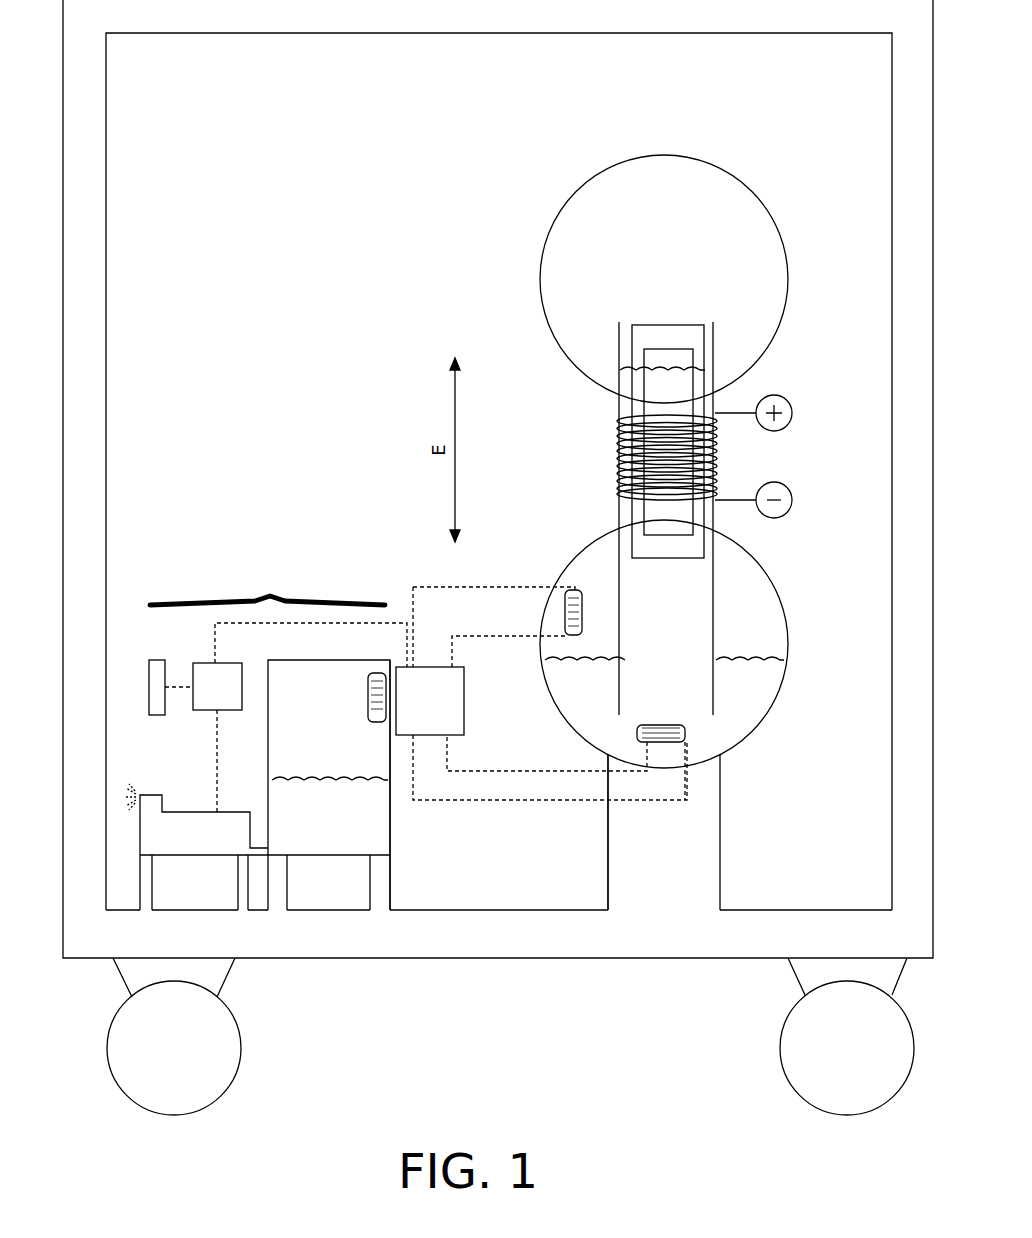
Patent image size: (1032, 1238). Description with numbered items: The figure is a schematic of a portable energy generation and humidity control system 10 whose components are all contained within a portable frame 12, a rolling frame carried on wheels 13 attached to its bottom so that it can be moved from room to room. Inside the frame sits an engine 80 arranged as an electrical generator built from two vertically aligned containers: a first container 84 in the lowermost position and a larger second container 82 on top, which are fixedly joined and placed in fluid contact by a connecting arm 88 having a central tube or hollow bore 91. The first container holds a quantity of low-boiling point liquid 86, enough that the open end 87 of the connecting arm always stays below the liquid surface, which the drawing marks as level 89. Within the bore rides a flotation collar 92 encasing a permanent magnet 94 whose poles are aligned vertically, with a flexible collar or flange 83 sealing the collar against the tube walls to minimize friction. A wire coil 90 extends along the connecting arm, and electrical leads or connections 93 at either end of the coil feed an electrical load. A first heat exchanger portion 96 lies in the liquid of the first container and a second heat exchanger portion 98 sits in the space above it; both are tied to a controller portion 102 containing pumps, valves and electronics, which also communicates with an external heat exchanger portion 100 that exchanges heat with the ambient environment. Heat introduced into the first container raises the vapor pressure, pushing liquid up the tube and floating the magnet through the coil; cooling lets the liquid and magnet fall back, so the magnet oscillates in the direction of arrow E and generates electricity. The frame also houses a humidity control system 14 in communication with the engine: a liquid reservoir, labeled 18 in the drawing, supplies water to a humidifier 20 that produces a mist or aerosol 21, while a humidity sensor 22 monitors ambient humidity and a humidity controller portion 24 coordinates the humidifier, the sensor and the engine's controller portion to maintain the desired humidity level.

The portable energy generation and humidity control system 10 is at (565, 972).
The portable frame 12 is at (87, 437).
The wheels 13 is at (203, 1050).
The humidity control system 14 is at (275, 597).
The fluid reservoir 18 is at (360, 825).
The pump 20 is at (188, 843).
The mist or aerosol 21 is at (123, 776).
The humidity sensor 22 is at (163, 662).
The humidity controller portion 24 is at (200, 703).
The engine 80 is at (528, 227).
The second container 82 is at (788, 272).
The flexible collar or flange 83 is at (627, 370).
The first container 84 is at (788, 637).
The low-boiling point liquid 86 is at (718, 730).
The open end of the connecting arm 87 is at (619, 685).
The connecting arm 88 is at (618, 556).
The fluid 89 is at (760, 662).
The wire coil 90 is at (617, 445).
The central tube or hollow bore 91 is at (693, 587).
The flotation collar 92 is at (660, 322).
The electrical leads or connections 93 is at (792, 415).
The permanent magnet 94 is at (673, 345).
The first heat exchanger portion 96 is at (657, 725).
The second heat exchanger portion 98 is at (565, 612).
The external heat exchanger portion 100 is at (378, 672).
The controller portion 102 is at (464, 707).